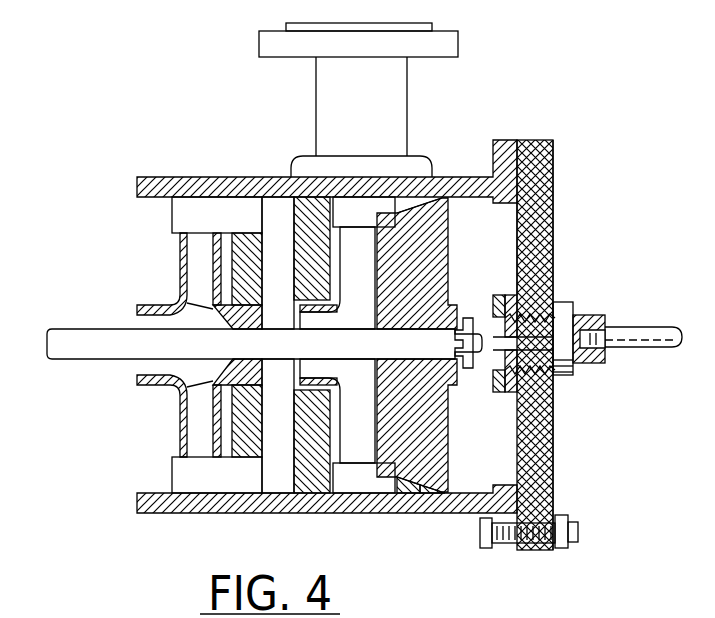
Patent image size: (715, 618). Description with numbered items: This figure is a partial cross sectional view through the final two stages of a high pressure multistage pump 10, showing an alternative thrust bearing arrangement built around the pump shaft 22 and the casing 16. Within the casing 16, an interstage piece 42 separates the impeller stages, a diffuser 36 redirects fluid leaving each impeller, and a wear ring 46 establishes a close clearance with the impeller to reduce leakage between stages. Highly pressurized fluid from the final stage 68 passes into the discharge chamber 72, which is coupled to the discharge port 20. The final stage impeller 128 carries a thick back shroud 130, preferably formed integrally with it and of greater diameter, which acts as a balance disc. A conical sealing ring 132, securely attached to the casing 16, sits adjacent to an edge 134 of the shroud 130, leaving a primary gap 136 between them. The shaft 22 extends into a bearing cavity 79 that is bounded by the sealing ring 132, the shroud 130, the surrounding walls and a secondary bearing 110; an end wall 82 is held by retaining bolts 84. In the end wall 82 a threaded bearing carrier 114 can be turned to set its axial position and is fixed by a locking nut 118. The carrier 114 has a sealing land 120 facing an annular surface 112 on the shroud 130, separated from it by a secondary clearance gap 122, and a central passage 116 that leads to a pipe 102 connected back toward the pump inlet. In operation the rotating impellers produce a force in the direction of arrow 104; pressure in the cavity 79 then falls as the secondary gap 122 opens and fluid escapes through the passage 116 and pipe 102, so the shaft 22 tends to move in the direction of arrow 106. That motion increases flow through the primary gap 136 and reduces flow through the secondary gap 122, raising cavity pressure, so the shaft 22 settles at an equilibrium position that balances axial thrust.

The brake assembly 10 is at (188, 67).
The casing 16 is at (165, 183).
The discharge port 20 is at (405, 82).
The shaft 22 is at (82, 348).
The diffuser 36 is at (348, 195).
The interstage piece 42 is at (240, 432).
The wear ring 46 is at (278, 487).
The final stage 68 is at (142, 437).
The discharge chamber 72 is at (318, 238).
The bearing cavity 79 is at (505, 424).
The end wall 82 is at (544, 141).
The retaining bolts 84 is at (572, 528).
The pipe 102 is at (660, 330).
The arrow 104 is at (125, 305).
The arrow 106 is at (118, 375).
The secondary bearing 110 is at (556, 190).
The annular surface 112 is at (490, 286).
The bearing carrier 114 is at (560, 330).
The central passage 116 is at (548, 312).
The locking nut 118 is at (590, 322).
The sealing land 120 is at (525, 322).
The secondary clearance gap 122 is at (505, 298).
The final stage impeller 128 is at (358, 415).
The thick back shroud 130 is at (413, 409).
The sealing ring 132 is at (407, 492).
The edge 134 is at (400, 205).
The primary gap 136 is at (430, 483).